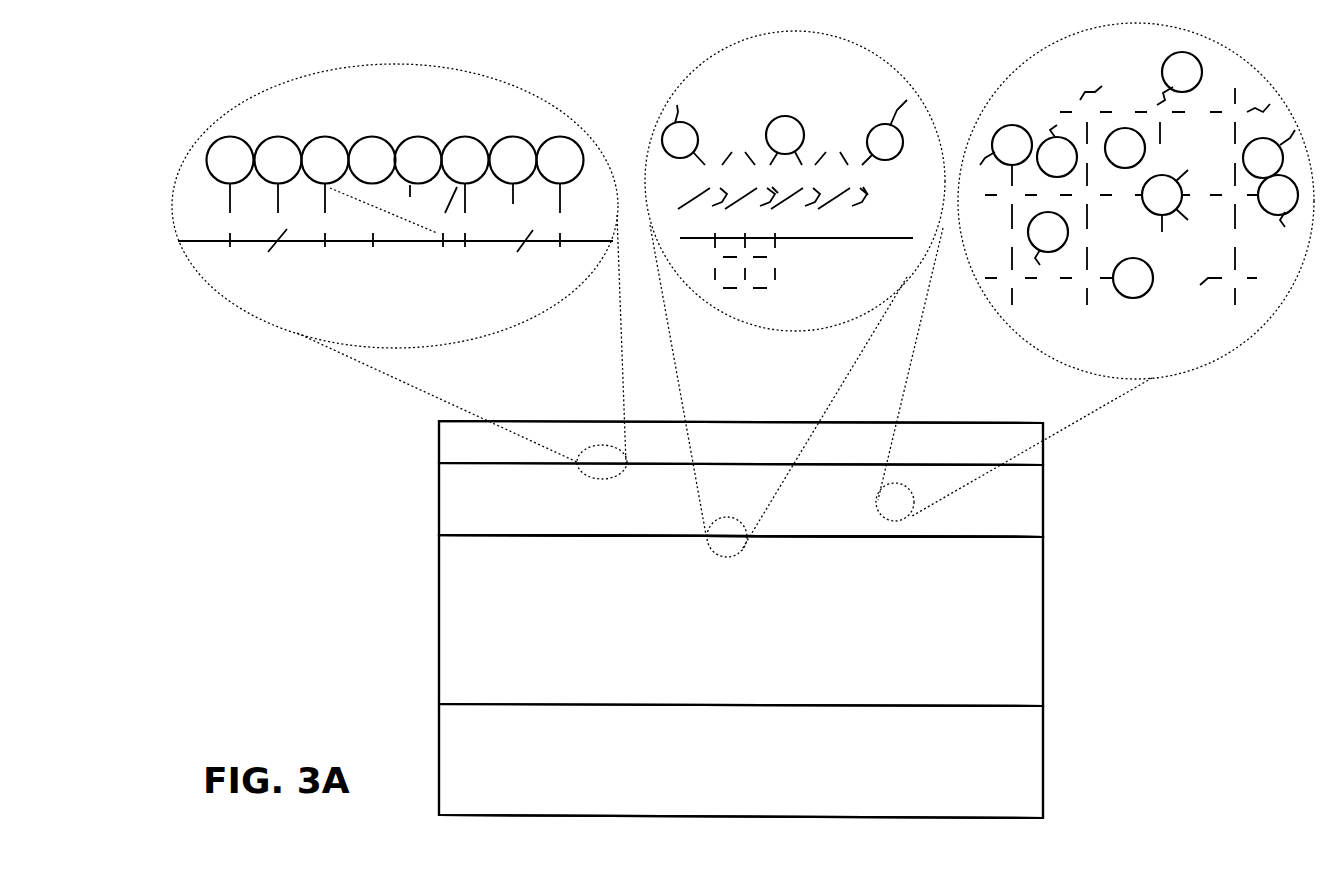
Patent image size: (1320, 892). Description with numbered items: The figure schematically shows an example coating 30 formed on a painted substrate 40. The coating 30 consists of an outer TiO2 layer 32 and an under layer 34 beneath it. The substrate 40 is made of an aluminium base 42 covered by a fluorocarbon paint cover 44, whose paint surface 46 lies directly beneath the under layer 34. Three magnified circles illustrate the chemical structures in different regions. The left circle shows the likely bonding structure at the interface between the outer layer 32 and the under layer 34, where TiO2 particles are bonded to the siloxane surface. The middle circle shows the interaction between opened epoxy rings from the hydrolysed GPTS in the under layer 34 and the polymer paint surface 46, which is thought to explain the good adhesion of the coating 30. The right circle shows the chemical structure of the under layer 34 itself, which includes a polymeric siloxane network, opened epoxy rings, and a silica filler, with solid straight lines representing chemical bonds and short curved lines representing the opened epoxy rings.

The coating 30 is at (423, 466).
The outer TiO2 layer 32 is at (386, 104).
The under layer 34 is at (776, 79).
The painted substrate 40 is at (423, 688).
The aluminium base 42 is at (1045, 757).
The fluorocarbon paint cover 44 is at (1045, 620).
The paint surface 46 is at (1020, 537).